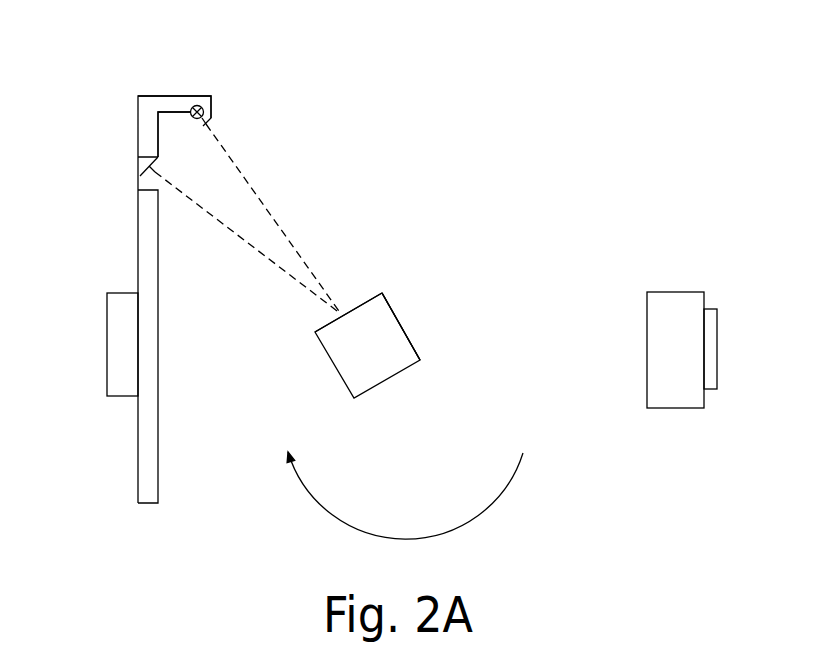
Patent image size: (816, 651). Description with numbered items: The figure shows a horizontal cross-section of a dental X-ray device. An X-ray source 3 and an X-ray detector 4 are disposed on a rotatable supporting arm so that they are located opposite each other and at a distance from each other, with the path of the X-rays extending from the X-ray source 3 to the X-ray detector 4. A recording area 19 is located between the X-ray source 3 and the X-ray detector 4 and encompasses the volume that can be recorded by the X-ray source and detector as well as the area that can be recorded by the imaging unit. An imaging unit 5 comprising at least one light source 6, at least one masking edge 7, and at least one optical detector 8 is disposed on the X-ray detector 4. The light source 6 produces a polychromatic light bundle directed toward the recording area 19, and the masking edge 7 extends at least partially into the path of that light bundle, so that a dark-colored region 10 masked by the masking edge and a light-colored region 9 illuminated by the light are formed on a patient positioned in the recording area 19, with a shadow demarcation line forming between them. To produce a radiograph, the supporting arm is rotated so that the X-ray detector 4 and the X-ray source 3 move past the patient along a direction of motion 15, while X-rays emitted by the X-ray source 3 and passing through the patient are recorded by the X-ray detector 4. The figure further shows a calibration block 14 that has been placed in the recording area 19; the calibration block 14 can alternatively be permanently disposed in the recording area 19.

The X-ray source 3 is at (665, 359).
The X-ray detector 4 is at (138, 472).
The imaging unit 5 is at (140, 108).
The light source 6 is at (205, 97).
The masking edge 7 is at (213, 122).
The optical detector 8 is at (139, 167).
The light-colored region 9 is at (314, 328).
The dark-colored region 10 is at (371, 291).
The calibration block 14 is at (397, 351).
The direction of motion 15 is at (320, 502).
The recording area 19 is at (427, 298).